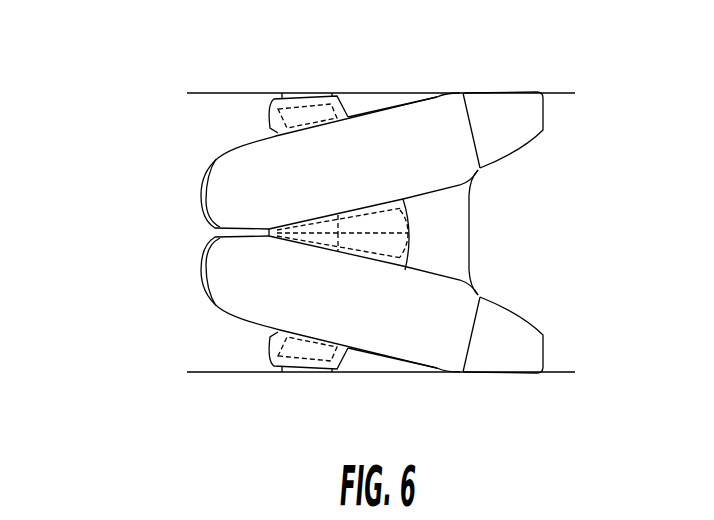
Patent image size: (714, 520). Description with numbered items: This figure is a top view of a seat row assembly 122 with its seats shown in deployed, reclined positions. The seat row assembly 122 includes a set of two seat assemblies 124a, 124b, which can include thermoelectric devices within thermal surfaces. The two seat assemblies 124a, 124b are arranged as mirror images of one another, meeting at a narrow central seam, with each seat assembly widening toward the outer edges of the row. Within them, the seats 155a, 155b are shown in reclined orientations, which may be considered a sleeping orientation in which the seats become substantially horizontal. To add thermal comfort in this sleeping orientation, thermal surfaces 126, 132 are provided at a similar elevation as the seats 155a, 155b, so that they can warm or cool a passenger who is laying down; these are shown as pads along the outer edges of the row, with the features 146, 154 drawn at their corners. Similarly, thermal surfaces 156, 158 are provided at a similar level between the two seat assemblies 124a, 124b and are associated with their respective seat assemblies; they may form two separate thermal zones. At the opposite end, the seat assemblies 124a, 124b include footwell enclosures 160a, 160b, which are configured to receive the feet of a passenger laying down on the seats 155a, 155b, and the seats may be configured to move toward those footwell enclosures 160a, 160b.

The seat row assembly 122 is at (182, 80).
The seat assembly 124a is at (176, 201).
The seat assembly 124b is at (170, 273).
The first pad 146 is at (264, 100).
The thermal surface 126 is at (298, 110).
The second pad 154 is at (268, 364).
The thermal surface 132 is at (298, 351).
The seat 155a is at (398, 130).
The seat 155b is at (398, 342).
The footwell enclosure 160a is at (502, 103).
The footwell enclosure 160b is at (500, 363).
The thermal surface 156 is at (400, 223).
The thermal surface 158 is at (400, 243).